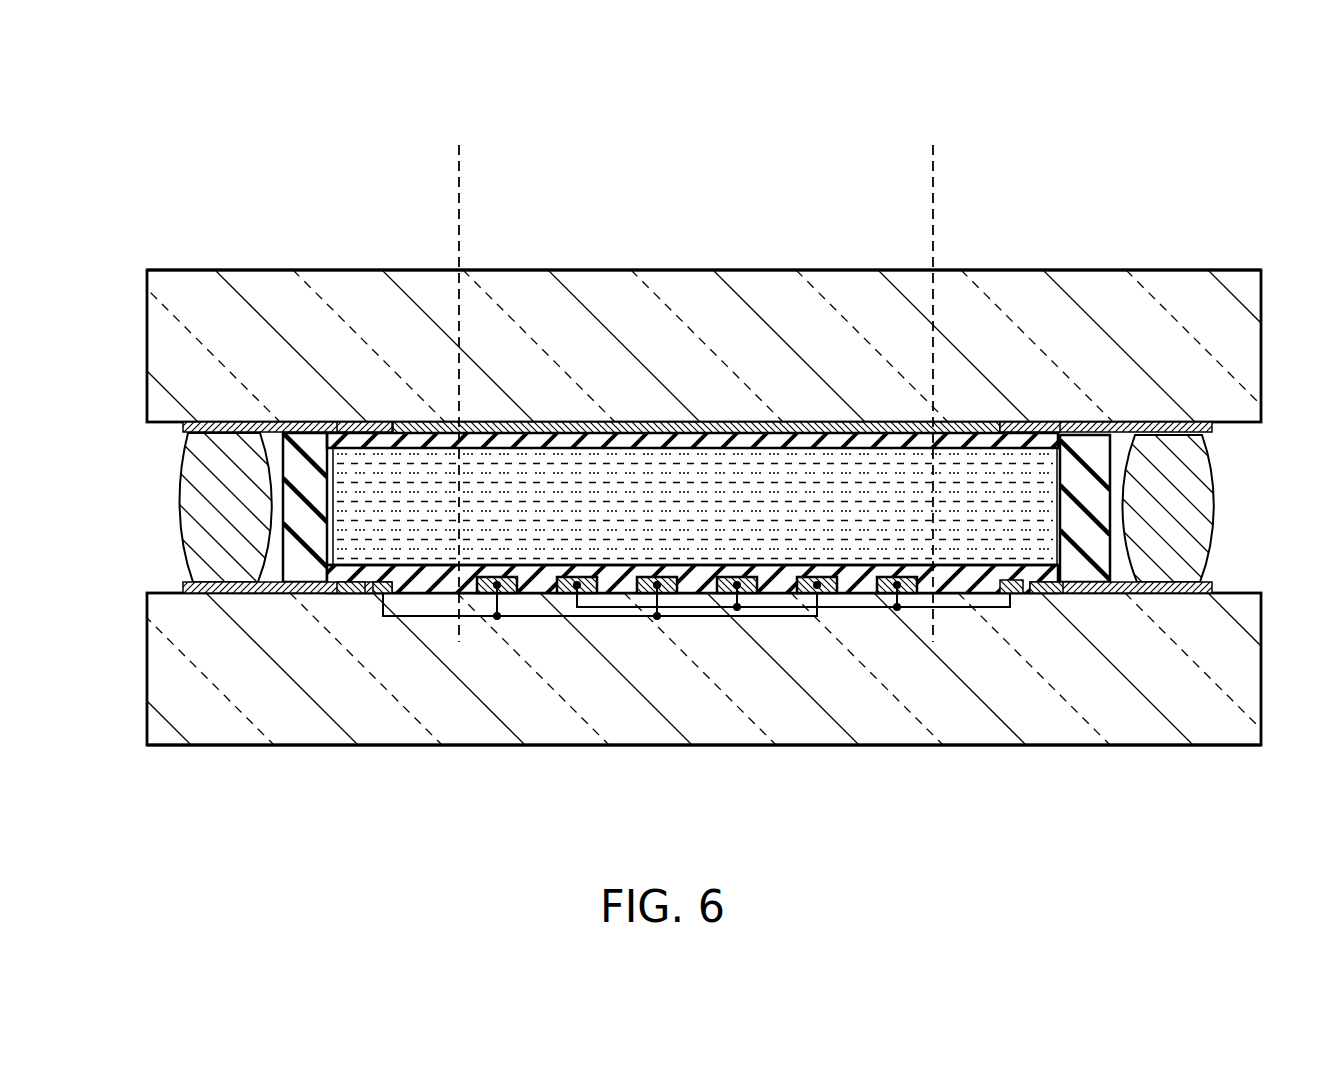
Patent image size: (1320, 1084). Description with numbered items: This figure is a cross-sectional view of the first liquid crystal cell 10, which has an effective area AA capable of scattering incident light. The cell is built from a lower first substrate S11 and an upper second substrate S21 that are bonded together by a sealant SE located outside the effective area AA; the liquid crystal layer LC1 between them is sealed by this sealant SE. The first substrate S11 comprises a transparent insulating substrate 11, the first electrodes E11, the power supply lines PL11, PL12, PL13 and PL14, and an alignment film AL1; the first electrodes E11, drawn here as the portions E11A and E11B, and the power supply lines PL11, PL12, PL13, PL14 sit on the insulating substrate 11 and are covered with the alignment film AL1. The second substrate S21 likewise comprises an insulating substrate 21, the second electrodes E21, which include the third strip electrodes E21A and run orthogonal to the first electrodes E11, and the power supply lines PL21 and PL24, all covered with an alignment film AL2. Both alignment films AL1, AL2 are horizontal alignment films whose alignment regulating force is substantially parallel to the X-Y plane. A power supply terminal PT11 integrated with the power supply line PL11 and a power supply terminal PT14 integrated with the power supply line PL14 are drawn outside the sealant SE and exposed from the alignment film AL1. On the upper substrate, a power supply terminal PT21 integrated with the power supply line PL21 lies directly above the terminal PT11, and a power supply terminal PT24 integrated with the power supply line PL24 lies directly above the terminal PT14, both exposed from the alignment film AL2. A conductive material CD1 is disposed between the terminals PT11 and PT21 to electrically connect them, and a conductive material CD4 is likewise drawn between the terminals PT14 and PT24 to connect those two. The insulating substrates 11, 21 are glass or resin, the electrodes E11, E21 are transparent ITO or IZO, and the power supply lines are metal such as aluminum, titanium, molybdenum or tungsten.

The first liquid crystal cell 10 is at (1226, 142).
The effective area AA is at (933, 160).
The sealant SE is at (296, 440).
The power supply line PL21 is at (367, 424).
The second electrodes E21 is at (696, 323).
The third strip electrodes E21A is at (620, 424).
The alignment film AL1 is at (777, 573).
The alignment film AL2 is at (820, 440).
The liquid crystal layer LC1 is at (883, 470).
The power supply line PL24 is at (1020, 424).
The second substrate S21 is at (1261, 270).
The insulating substrate 21 is at (1259, 345).
The power supply terminal PT21 is at (183, 427).
The conductive material CD1 is at (184, 510).
The power supply terminal PT11 is at (183, 588).
The power supply terminal PT24 is at (1212, 427).
The conductive member CD4 is at (1212, 508).
The power supply terminal PT14 is at (1212, 588).
The insulating substrate 11 is at (1259, 679).
The first substrate S11 is at (1261, 745).
The power supply line PL11 is at (350, 594).
The power supply line PL12 is at (378, 594).
The first electrodes E11 is at (692, 534).
The first electrode E11A is at (503, 593).
The second electrode E11B is at (587, 593).
The power supply line PL13 is at (1011, 594).
The power supply line PL14 is at (1042, 594).